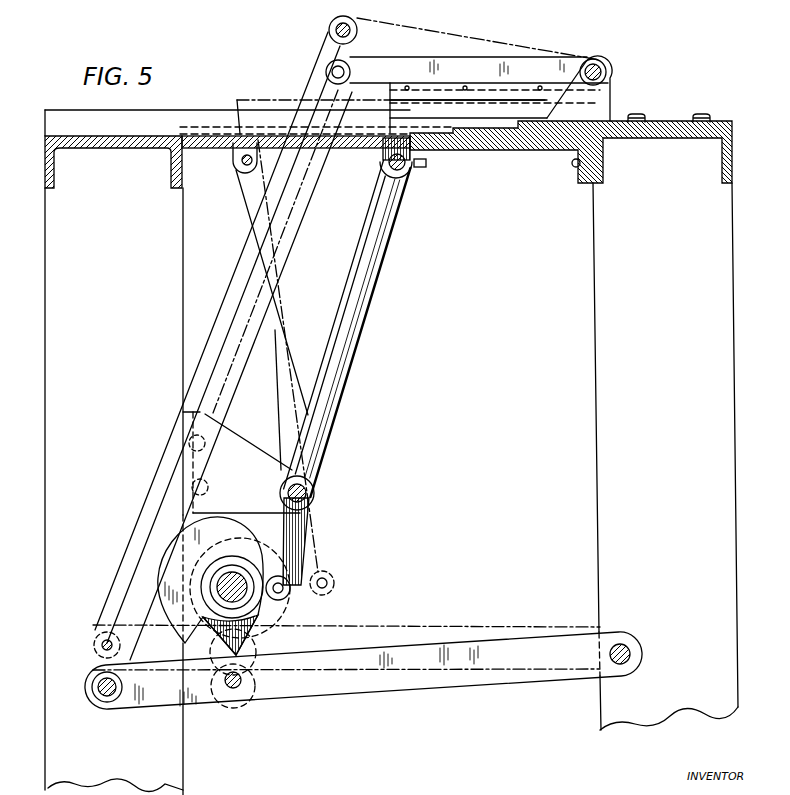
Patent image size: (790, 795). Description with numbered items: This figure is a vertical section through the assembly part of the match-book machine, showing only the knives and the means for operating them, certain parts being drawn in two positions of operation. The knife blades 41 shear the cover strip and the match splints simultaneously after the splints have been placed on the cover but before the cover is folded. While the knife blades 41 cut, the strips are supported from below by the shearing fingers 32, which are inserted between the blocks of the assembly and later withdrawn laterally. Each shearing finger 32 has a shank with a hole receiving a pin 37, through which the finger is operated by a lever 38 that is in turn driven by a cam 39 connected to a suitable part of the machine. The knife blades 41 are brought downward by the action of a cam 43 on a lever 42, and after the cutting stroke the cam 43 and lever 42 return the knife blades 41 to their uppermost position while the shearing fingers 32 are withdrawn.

The shearing finger 32 is at (277, 100).
The pin 37 is at (242, 172).
The lever 38 is at (338, 310).
The cam 39 is at (175, 582).
The knife blade 41 is at (503, 61).
The lever 42 is at (227, 344).
The cam 43 is at (277, 625).